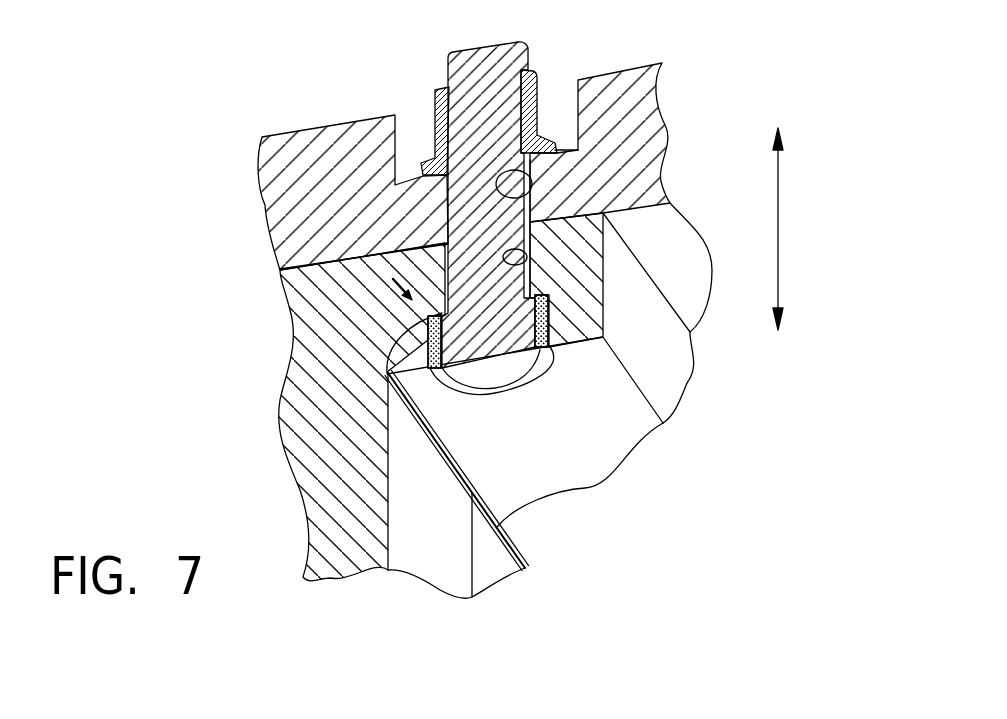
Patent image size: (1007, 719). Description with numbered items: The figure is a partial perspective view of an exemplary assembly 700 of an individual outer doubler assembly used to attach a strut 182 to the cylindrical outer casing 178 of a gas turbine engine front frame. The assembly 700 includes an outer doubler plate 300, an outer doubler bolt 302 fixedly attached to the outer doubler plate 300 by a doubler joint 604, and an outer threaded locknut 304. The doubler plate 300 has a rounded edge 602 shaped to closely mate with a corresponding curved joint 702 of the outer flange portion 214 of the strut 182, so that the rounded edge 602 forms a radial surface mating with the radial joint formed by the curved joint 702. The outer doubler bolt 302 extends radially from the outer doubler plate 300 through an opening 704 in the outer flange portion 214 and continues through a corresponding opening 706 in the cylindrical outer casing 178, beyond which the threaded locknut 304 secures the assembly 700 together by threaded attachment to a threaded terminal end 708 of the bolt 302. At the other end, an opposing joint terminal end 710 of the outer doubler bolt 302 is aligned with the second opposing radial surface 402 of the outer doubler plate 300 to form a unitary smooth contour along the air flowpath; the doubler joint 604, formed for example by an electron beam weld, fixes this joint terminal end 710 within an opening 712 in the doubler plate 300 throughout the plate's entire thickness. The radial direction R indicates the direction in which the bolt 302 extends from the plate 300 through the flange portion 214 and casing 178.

The cylindrical outer casing 178 is at (638, 115).
The strut 182 is at (353, 523).
The outer flange portion 214 is at (577, 272).
The outer doubler plate 300 is at (650, 365).
The outer doubler bolt 302 is at (484, 68).
The outer threaded locknut 304 is at (437, 137).
The second opposing radial surface 402 is at (630, 436).
The rounded edge 602 is at (412, 332).
The doubler joint 604 is at (545, 365).
The assembly 700 is at (493, 424).
The curved joint 702 is at (387, 266).
The opening 704 is at (515, 260).
The opening 706 is at (560, 207).
The threaded terminal end 708 is at (522, 100).
The opposing joint terminal end 710 is at (503, 373).
The opening 712 is at (435, 333).
The radial direction R is at (778, 252).